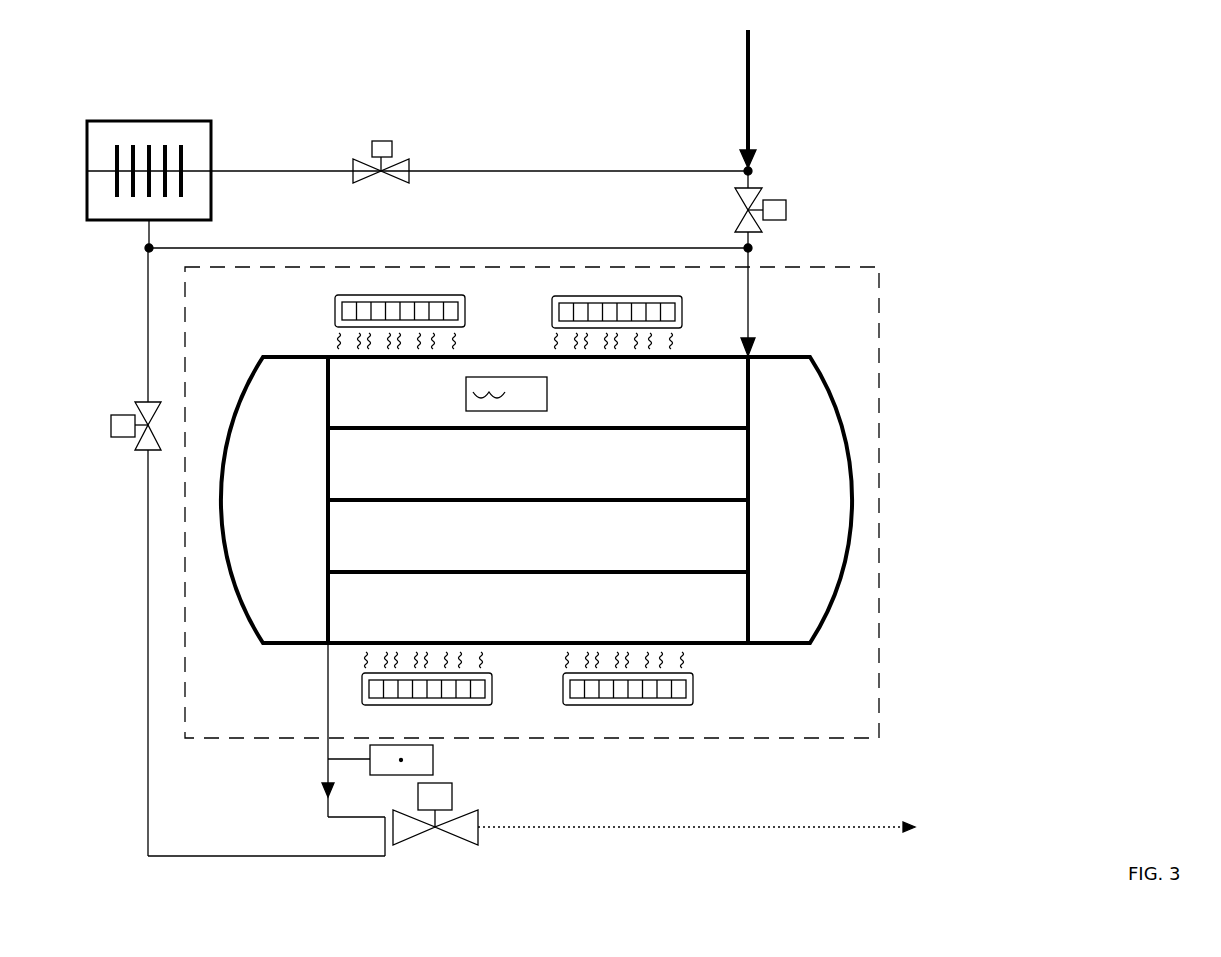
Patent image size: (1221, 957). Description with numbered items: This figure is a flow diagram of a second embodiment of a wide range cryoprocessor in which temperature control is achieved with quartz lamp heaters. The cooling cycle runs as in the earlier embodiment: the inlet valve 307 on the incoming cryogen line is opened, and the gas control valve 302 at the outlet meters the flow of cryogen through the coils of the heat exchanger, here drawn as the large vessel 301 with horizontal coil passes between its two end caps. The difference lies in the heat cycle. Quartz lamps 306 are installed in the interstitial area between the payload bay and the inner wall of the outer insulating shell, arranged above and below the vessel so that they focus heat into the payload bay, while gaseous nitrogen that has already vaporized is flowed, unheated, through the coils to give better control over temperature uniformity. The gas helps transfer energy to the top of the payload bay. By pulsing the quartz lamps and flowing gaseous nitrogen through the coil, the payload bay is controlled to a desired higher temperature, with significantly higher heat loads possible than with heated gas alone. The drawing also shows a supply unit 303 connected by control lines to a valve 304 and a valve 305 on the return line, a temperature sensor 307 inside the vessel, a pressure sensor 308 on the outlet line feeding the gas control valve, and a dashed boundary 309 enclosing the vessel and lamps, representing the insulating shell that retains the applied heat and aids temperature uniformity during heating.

The reaction vessel 301 is at (536, 500).
The gas control valve 302 is at (435, 823).
The power supply 303 is at (149, 170).
The control valve 304 is at (381, 167).
The valve 305 is at (119, 426).
The quartz lamps 306 is at (514, 501).
The inlet valve 307 is at (644, 309).
The pressure sensor 308 is at (421, 760).
The control unit 309 is at (631, 502).